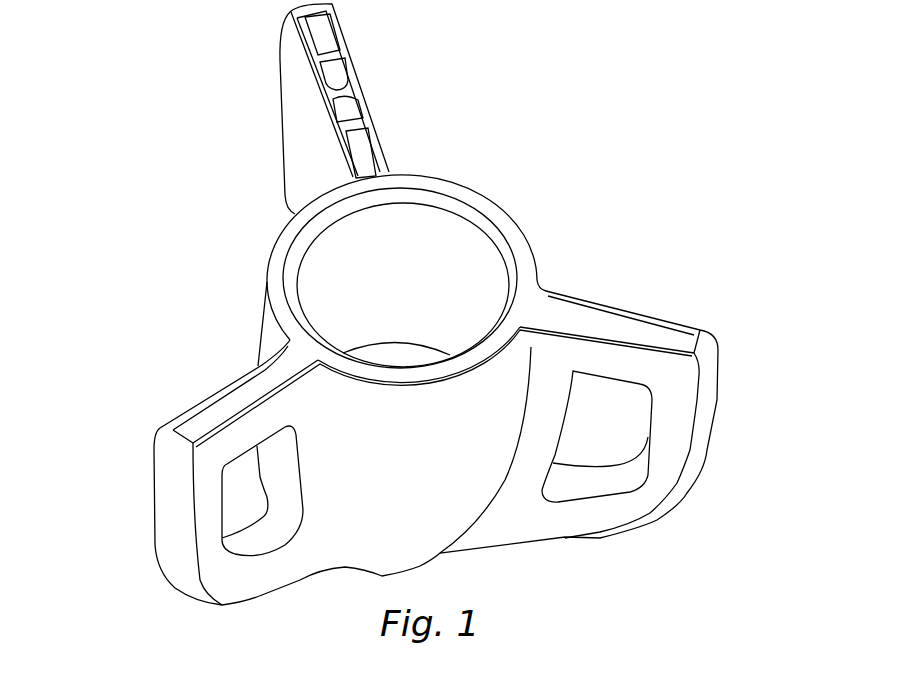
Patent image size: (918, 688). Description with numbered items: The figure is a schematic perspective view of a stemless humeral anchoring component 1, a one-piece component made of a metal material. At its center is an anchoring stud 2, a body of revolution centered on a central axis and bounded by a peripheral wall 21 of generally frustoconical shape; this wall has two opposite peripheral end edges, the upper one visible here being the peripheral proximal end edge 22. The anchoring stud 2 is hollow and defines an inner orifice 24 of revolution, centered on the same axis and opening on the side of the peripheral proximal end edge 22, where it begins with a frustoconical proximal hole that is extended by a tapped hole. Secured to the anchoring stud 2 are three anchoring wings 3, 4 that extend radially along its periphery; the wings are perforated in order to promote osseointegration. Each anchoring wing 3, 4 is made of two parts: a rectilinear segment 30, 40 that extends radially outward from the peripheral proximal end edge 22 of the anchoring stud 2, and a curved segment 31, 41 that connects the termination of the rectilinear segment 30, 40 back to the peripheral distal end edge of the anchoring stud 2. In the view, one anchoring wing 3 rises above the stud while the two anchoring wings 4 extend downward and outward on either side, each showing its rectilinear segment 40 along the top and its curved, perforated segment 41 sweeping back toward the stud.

The stemless humeral anchoring component 1 is at (123, 78).
The anchoring stud 2 is at (268, 252).
The peripheral wall 21 is at (268, 328).
The peripheral proximal end edge 22 is at (505, 206).
The inner orifice 24 is at (440, 237).
The anchoring wing 3 is at (279, 40).
The rectilinear segment 30 is at (332, 72).
The curved segment 31 is at (303, 117).
The anchoring wing 4 is at (174, 483).
The rectilinear segment 40 is at (203, 425).
The curved segment 41 is at (230, 578).